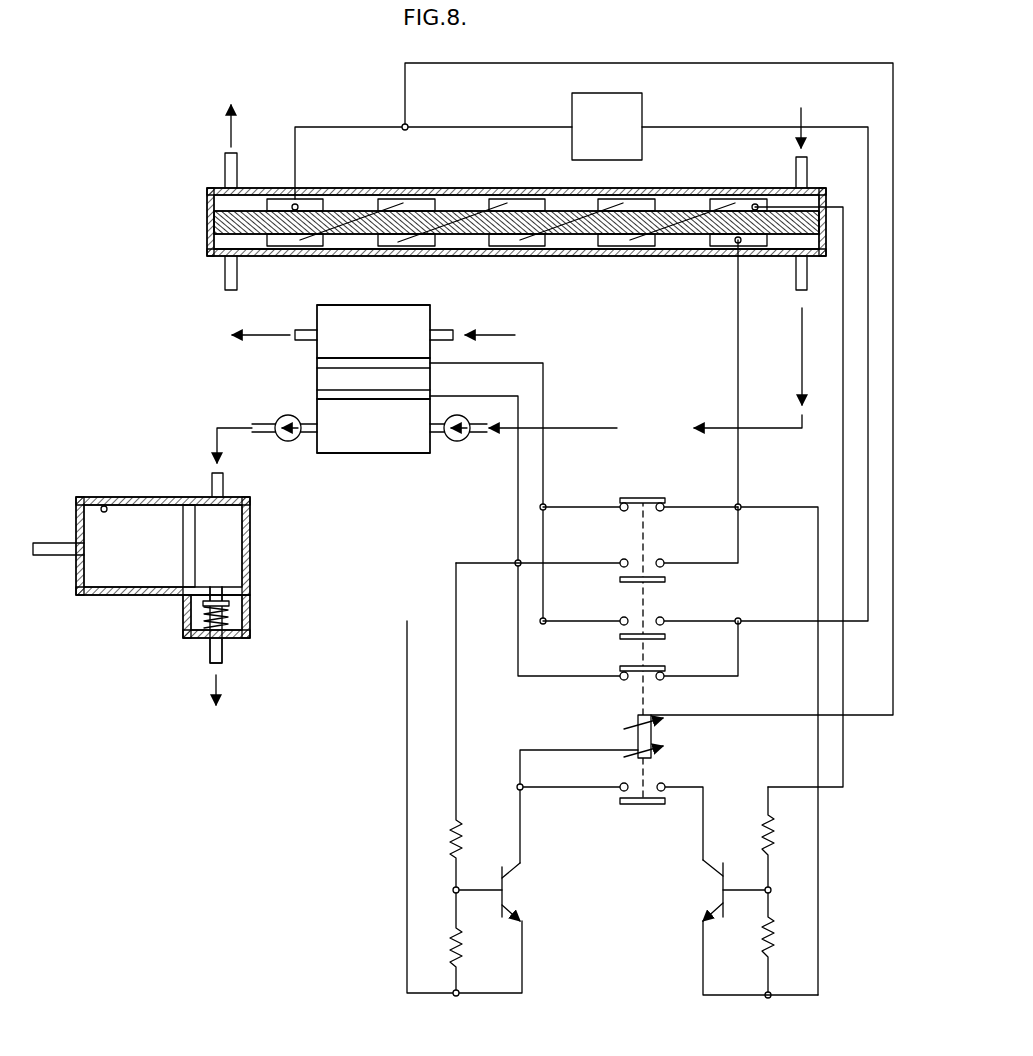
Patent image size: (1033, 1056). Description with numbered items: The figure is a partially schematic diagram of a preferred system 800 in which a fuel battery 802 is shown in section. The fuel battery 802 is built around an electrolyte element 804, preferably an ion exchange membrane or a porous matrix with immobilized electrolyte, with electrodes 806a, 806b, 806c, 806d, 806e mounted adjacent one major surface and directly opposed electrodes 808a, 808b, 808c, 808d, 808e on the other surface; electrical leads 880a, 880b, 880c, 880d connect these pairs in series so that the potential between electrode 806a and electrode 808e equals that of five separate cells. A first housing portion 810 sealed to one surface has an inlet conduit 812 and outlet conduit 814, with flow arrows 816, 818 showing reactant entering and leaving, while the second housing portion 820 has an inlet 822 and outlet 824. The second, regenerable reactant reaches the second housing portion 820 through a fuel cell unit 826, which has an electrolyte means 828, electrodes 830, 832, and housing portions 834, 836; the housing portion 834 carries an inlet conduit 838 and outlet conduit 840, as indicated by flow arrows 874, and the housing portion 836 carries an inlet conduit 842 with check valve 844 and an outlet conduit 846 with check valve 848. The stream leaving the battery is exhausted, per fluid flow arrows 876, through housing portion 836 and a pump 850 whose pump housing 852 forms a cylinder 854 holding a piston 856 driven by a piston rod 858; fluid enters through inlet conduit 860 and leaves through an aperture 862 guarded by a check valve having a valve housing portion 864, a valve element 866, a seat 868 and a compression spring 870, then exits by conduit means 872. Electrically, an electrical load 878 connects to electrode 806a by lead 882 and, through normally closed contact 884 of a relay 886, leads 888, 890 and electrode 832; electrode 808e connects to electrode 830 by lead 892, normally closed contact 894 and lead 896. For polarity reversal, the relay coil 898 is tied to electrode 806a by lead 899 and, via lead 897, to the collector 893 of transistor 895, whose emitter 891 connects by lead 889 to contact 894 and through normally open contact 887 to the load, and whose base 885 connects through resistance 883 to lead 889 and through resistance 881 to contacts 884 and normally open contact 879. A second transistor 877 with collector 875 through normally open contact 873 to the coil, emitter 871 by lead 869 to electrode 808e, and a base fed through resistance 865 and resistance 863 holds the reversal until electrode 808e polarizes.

The system 800 is at (357, 106).
The fuel battery 802 is at (634, 258).
The electrolyte element 804 is at (214, 222).
The electrode 806a is at (266, 196).
The electrode 806b is at (408, 196).
The electrode 806c is at (520, 196).
The electrode 806d is at (638, 198).
The electrode 806e is at (738, 198).
The electrode 808a is at (288, 246).
The electrode 808b is at (404, 246).
The electrode 808c is at (503, 246).
The electrode 808d is at (610, 246).
The electrode 808e is at (721, 246).
The electrical lead 880a is at (356, 204).
The electrical lead 880b is at (473, 204).
The electrical lead 880c is at (578, 204).
The electrical lead 880d is at (698, 204).
The first housing portion 810 is at (819, 192).
The inlet conduit 812 is at (808, 170).
The outlet conduit 814 is at (223, 166).
The flow arrow 816 is at (802, 108).
The flow arrow 818 is at (230, 128).
The second housing portion 820 is at (214, 250).
The inlet 822 is at (224, 269).
The outlet 824 is at (796, 280).
The fuel cell unit 826 is at (388, 454).
The electrolyte means 828 is at (328, 376).
The electrode 830 is at (378, 357).
The electrode 832 is at (376, 396).
The housing portion 834 is at (348, 314).
The housing portion 836 is at (338, 453).
The inlet conduit 838 is at (442, 328).
The outlet conduit 840 is at (310, 328).
The inlet conduit 842 is at (438, 441).
The check valve 844 is at (468, 415).
The outlet conduit 846 is at (313, 414).
The check valve 848 is at (285, 441).
The pump 850 is at (86, 596).
The pump housing 852 is at (250, 530).
The cylinder 854 is at (104, 496).
The piston 856 is at (184, 506).
The piston rod 858 is at (54, 550).
The inlet conduit 860 is at (225, 484).
The aperture 862 is at (218, 584).
The valve housing portion 864 is at (252, 623).
The valve element 866 is at (202, 610).
The seat 868 is at (228, 604).
The compression spring 870 is at (230, 312).
The conduit means 872 is at (208, 651).
The normally open relay contact 873 is at (661, 780).
The flow arrows 874 is at (497, 336).
The collector 875 is at (704, 871).
The fluid flow arrows 876 is at (216, 428).
The transistor 877 is at (716, 888).
The electrical load 878 is at (642, 111).
The normally open relay contact 879 is at (632, 554).
The resistance 881 is at (452, 838).
The electrical lead 882 is at (310, 126).
The resistance 883 is at (464, 947).
The normally closed contact 884 is at (661, 684).
The base 885 is at (496, 882).
The relay 886 is at (634, 724).
The normally open contact 887 is at (653, 612).
The electrical lead 888 is at (780, 619).
The electrical lead 889 is at (406, 870).
The electrical lead 890 is at (552, 678).
The emitter 891 is at (512, 909).
The electrical lead 892 is at (738, 357).
The collector 893 is at (516, 869).
The normally closed contact 894 is at (661, 514).
The transistor 895 is at (514, 889).
The electrical lead 896 is at (548, 398).
The electrical lead 897 is at (516, 756).
The coil 898 is at (660, 733).
The electrical lead 899 is at (758, 722).
The resistance 863 is at (760, 831).
The resistance 865 is at (762, 946).
The electrical lead 869 is at (730, 995).
The emitter 871 is at (709, 903).